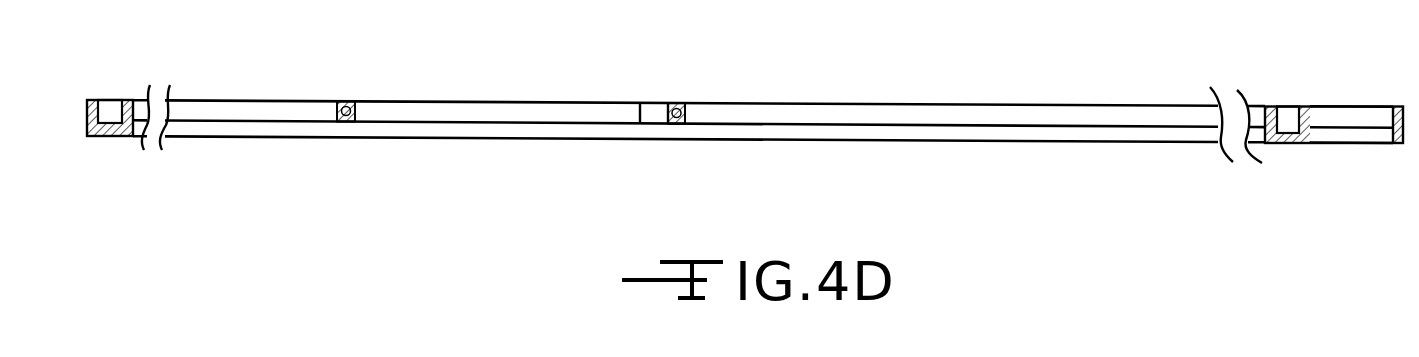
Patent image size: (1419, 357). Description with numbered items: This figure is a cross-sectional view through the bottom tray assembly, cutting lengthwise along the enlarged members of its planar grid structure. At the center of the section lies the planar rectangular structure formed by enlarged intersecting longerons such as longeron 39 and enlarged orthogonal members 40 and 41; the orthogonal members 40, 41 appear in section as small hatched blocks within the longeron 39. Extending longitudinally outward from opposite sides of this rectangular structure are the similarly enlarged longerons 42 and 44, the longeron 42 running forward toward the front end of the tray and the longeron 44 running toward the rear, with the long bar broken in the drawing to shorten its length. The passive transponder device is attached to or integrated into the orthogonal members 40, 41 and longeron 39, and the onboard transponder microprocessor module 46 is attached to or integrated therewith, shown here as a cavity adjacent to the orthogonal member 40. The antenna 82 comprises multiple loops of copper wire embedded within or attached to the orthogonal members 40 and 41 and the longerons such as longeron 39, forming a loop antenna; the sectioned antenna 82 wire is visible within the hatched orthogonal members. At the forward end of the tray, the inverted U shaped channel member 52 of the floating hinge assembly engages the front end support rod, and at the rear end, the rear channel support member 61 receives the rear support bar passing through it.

The longeron 39 is at (597, 115).
The orthogonal member 40 is at (682, 105).
The orthogonal member 41 is at (352, 102).
The longeron 42 is at (325, 137).
The longeron 44 is at (1100, 117).
The onboard transponder microprocessor module 46 is at (653, 110).
The inverted U shaped channel member 52 is at (93, 134).
The rear channel support member 61 is at (1290, 142).
The antenna 82 is at (338, 102).